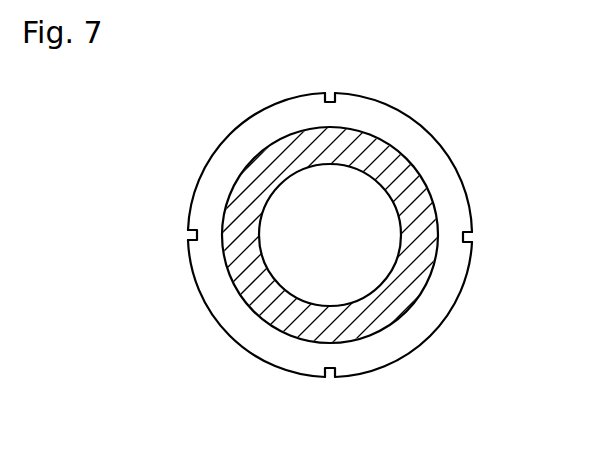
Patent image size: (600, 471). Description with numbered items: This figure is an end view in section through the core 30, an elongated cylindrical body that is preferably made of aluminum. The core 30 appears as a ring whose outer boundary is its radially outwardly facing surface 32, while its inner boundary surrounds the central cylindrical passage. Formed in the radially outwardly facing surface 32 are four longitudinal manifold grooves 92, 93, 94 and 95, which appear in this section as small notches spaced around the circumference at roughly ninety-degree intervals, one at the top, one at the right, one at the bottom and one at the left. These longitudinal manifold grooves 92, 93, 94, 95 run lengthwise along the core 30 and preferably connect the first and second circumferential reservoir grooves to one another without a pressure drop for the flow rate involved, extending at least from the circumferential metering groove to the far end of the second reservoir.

The core 30 is at (262, 168).
The radially outwardly facing surface 32 is at (472, 354).
The longitudinal manifold groove 92 is at (330, 91).
The longitudinal manifold groove 93 is at (464, 233).
The longitudinal manifold groove 94 is at (330, 372).
The longitudinal manifold groove 95 is at (196, 235).